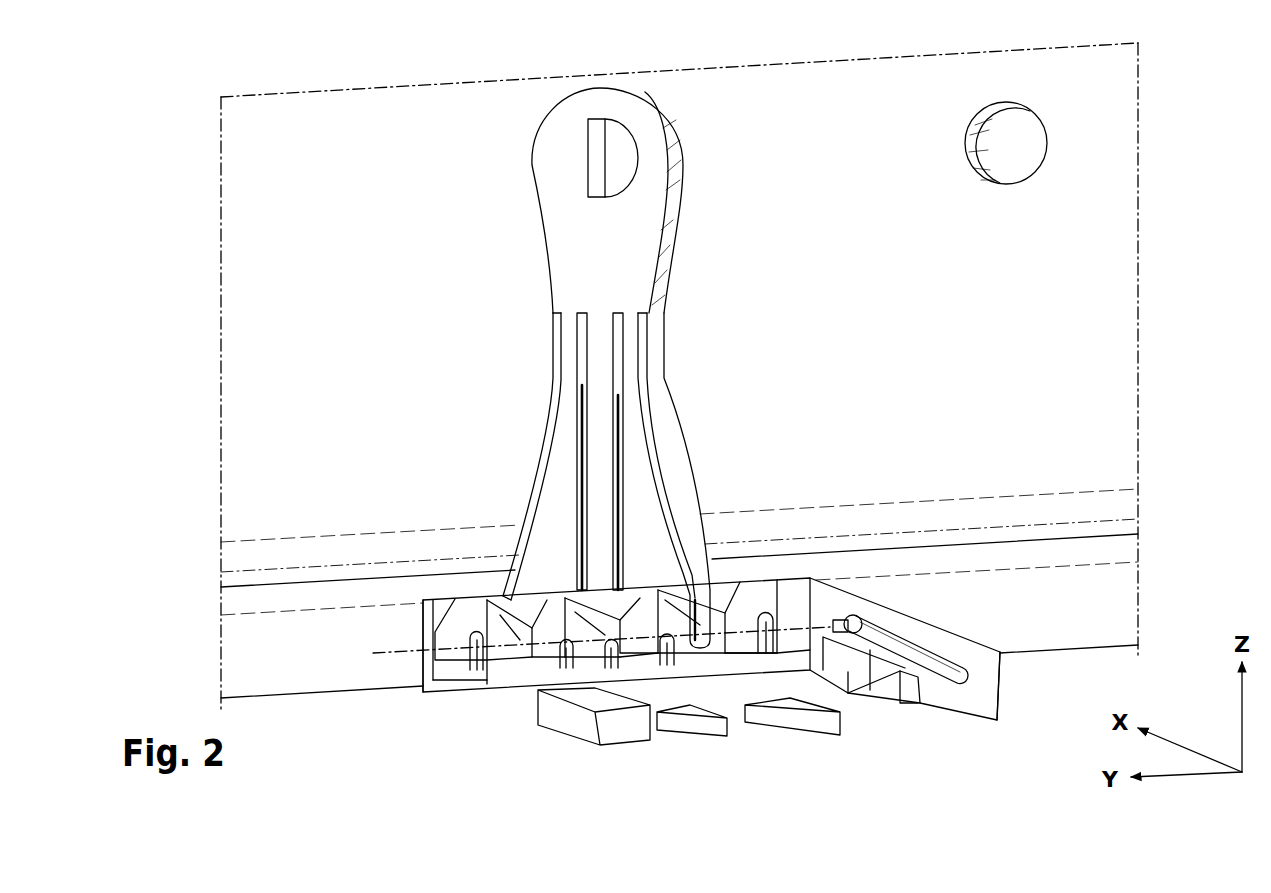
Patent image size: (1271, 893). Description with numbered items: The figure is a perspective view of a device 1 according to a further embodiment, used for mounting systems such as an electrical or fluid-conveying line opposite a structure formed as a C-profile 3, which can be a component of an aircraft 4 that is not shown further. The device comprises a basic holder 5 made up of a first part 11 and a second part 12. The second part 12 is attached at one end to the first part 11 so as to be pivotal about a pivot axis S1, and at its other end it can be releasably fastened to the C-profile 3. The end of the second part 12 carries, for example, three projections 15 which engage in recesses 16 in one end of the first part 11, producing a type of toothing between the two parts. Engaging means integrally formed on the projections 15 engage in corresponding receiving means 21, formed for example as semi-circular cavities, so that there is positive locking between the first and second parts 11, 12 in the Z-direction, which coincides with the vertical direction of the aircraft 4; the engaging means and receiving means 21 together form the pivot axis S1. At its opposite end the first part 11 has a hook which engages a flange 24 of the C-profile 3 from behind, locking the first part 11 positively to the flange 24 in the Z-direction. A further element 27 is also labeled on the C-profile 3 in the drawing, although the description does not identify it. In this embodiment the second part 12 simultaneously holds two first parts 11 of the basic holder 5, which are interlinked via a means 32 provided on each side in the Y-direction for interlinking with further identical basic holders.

The device 1 is at (532, 256).
The C-profile 3 is at (241, 260).
The aircraft 4 is at (203, 116).
The basic holder 5 is at (939, 728).
The first part 11 is at (423, 673).
The second part 12 is at (567, 375).
The projections 15 is at (512, 612).
The recesses 16 is at (522, 672).
The receiving means 21 is at (492, 652).
The flange 24 is at (1090, 594).
The panel edge 27 is at (243, 413).
The means for interlinking 32 is at (975, 677).
The pivot axis S1 is at (373, 653).